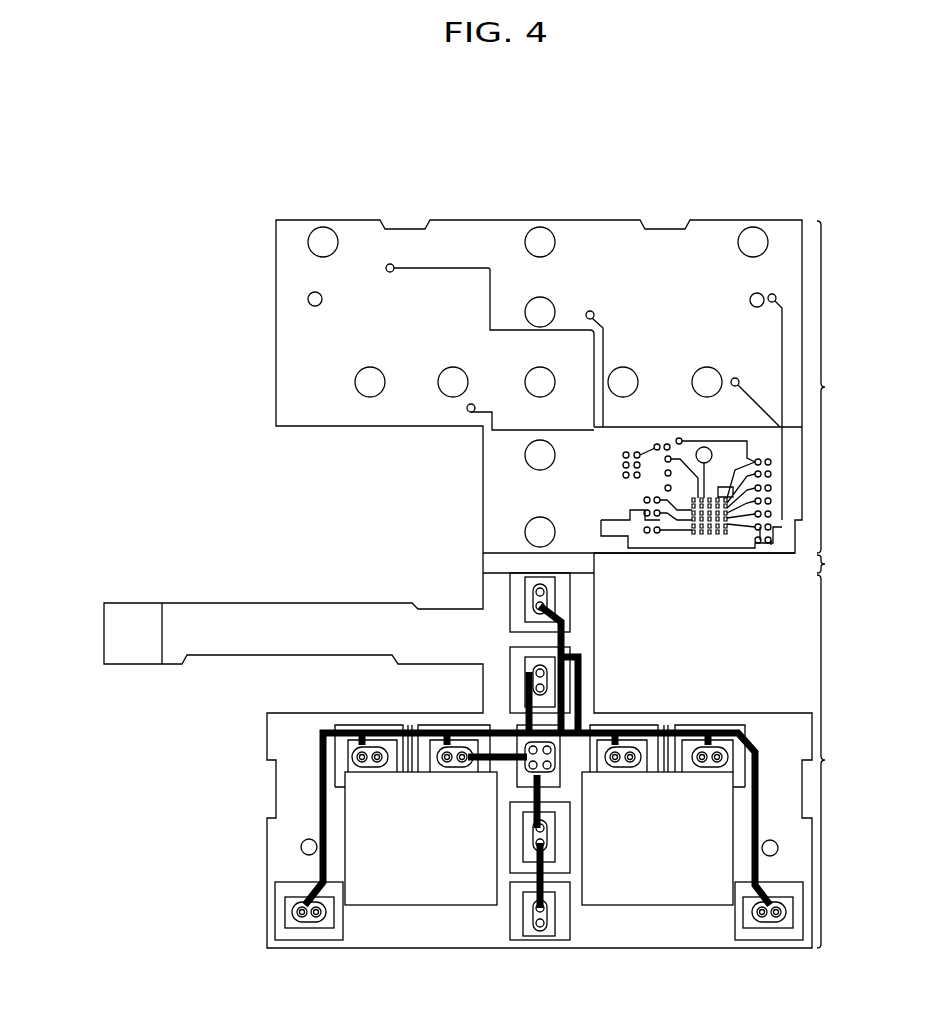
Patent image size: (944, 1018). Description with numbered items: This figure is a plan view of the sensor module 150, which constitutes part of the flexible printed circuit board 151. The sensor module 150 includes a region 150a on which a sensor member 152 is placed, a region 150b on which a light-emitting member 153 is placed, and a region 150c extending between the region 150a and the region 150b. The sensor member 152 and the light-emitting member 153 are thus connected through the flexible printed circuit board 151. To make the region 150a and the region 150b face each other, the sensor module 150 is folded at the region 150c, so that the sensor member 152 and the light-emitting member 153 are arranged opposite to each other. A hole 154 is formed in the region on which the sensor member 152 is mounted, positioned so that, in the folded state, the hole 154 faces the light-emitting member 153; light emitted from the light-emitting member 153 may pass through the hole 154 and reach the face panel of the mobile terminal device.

The sensor module 150 is at (690, 186).
The region 150a is at (848, 387).
The region 150b is at (589, 761).
The region 150c is at (847, 565).
The flexible printed circuit board 151 is at (483, 561).
The sensor member 152 is at (473, 232).
The light-emitting member 153 is at (548, 596).
The hole 154 is at (323, 236).